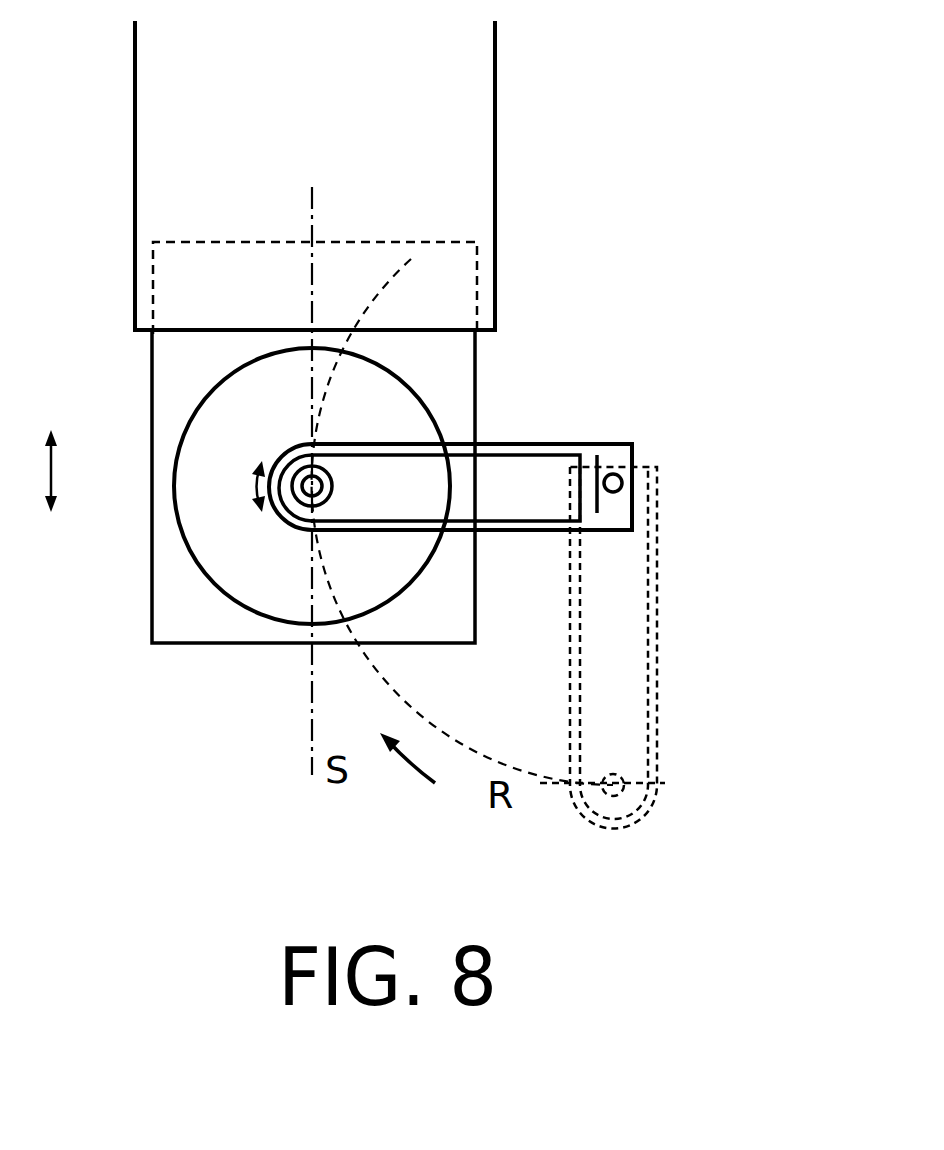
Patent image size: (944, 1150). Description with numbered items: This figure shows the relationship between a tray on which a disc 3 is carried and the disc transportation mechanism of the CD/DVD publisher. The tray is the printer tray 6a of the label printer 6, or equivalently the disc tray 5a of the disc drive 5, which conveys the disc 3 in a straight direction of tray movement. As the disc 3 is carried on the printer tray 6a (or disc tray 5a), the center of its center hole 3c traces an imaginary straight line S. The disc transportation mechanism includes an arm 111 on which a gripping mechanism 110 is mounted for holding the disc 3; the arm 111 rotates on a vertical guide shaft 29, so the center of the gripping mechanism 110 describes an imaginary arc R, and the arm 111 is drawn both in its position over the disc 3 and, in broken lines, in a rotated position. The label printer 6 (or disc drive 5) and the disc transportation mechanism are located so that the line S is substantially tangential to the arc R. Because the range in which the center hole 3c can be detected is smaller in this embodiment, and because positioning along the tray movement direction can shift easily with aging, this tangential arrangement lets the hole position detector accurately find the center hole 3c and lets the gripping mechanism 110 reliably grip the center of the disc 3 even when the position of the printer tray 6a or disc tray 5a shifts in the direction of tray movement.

The disc drive 5 is at (375, 175).
The label printer 6 is at (475, 112).
The disc tray 5a is at (282, 504).
The printer tray 6a is at (195, 625).
The disc 3 is at (200, 517).
The center hole 3c is at (272, 452).
The gripping mechanism 110 is at (290, 522).
The arm 111 is at (507, 468).
The vertical guide shaft 29 is at (613, 476).